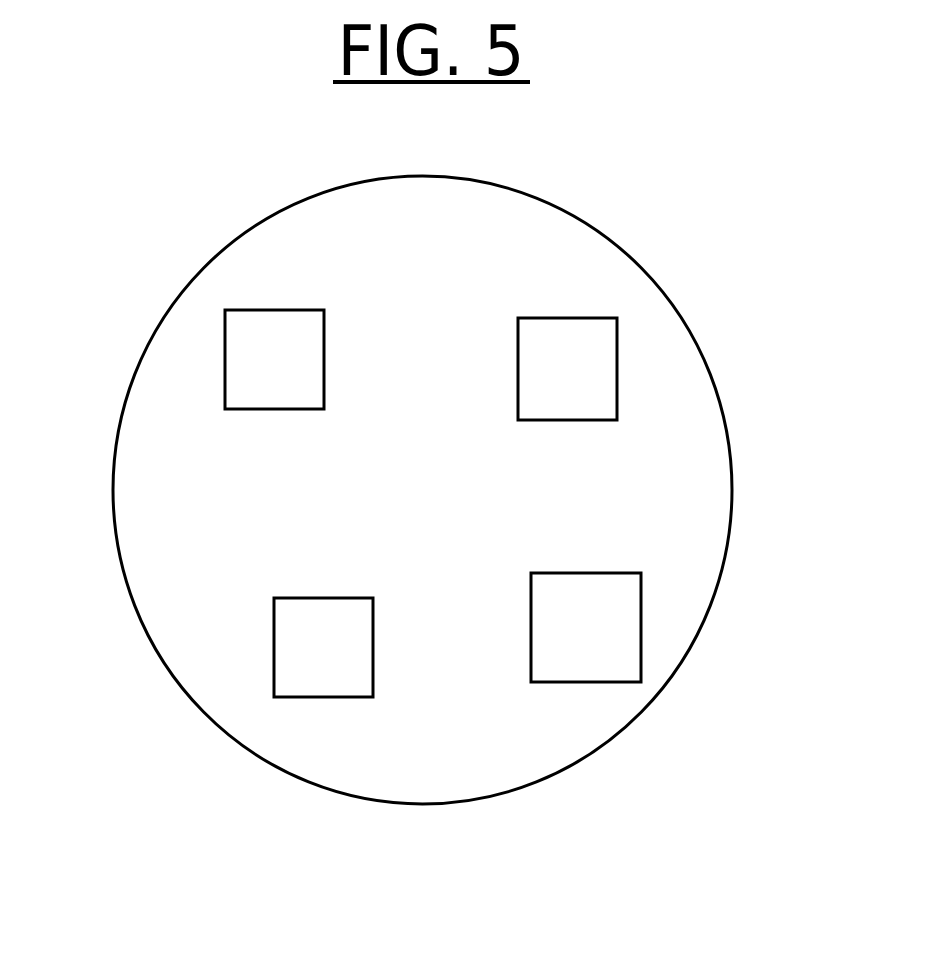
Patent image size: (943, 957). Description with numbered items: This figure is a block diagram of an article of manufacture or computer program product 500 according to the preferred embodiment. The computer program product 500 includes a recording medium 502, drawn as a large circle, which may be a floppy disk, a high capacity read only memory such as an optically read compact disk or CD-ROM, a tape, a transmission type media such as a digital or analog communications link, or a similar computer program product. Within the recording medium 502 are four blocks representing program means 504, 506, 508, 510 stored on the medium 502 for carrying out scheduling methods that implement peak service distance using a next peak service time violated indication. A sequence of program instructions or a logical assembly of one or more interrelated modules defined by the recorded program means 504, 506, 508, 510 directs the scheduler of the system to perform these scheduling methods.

The computer program product 500 is at (690, 278).
The recording medium 502 is at (158, 309).
The program means 504 is at (323, 647).
The program means 506 is at (586, 627).
The program means 508 is at (567, 369).
The program means 510 is at (274, 359).